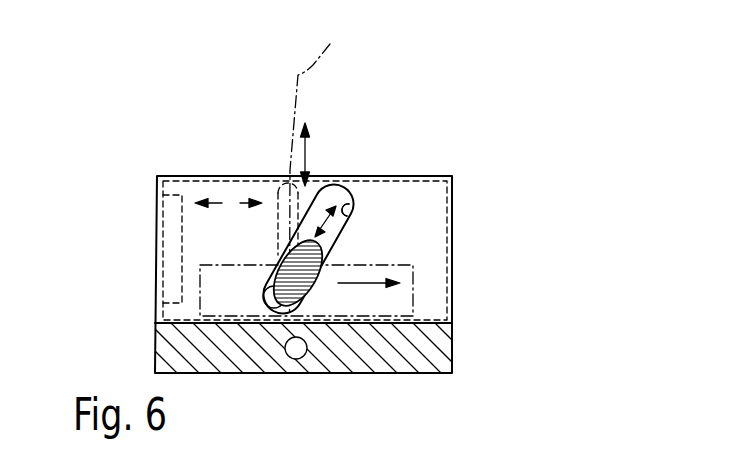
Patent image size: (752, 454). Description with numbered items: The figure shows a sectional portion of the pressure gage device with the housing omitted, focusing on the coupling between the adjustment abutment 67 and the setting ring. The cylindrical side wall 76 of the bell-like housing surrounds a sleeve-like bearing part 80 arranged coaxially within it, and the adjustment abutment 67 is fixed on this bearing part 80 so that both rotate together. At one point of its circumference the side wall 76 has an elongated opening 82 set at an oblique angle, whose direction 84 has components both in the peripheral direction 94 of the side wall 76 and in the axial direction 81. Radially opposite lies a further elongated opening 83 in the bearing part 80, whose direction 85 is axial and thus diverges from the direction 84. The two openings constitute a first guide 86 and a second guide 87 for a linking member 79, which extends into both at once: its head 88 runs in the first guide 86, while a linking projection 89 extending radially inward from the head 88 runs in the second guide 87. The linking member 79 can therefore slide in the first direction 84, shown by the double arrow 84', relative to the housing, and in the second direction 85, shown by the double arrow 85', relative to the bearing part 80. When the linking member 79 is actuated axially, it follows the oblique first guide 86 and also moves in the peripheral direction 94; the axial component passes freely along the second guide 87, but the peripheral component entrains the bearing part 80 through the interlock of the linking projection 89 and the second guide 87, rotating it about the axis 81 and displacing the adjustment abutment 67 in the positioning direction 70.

The adjustment abutment 67 is at (163, 288).
The positioning direction 70 is at (229, 202).
The side wall 76 is at (440, 176).
The linking member 79 is at (314, 278).
The bearing part 80 is at (413, 178).
The axial direction 81 is at (330, 44).
The elongated opening 82 is at (355, 211).
The first guide 86 is at (355, 211).
The further opening 83 is at (280, 182).
The second guide 87 is at (280, 182).
The direction of the opening 84 is at (356, 175).
The double arrow 84' is at (368, 234).
The direction of the second opening 85 is at (276, 117).
The double arrow 85' is at (336, 127).
The head 88 is at (270, 292).
The linking projection 89 is at (200, 265).
The peripheral direction 94 is at (372, 284).